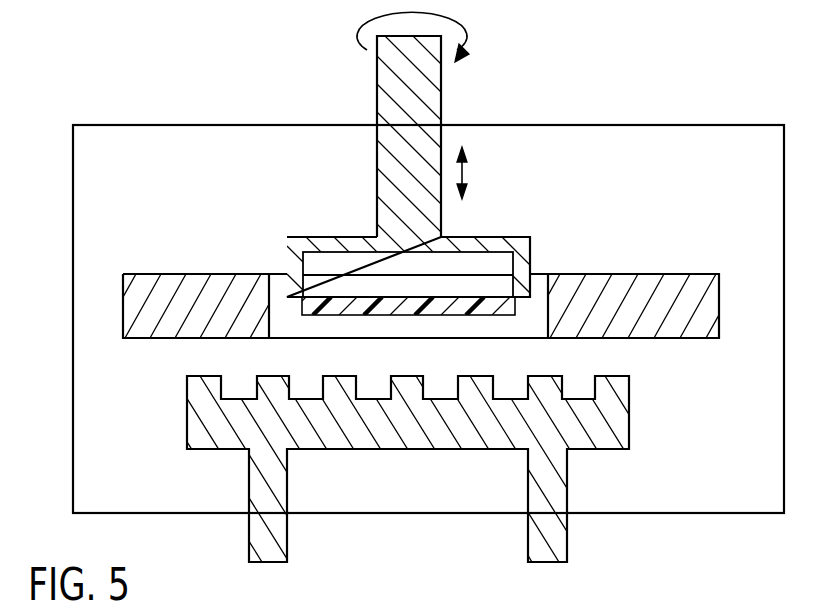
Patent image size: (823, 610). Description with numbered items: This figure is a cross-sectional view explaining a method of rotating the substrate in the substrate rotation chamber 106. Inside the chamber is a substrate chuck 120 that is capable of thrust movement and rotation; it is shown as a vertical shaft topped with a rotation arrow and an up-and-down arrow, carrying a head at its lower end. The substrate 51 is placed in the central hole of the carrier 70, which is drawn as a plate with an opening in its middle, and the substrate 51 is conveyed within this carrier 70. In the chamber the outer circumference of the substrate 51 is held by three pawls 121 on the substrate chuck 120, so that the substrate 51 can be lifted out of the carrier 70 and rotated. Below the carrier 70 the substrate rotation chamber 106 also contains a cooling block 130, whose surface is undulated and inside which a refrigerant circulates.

The substrate rotation chamber 106 is at (664, 124).
The substrate chuck 120 is at (432, 91).
The pawls 121 is at (287, 243).
The substrate 51 is at (503, 316).
The carrier 70 is at (668, 283).
The cooling block 130 is at (620, 419).